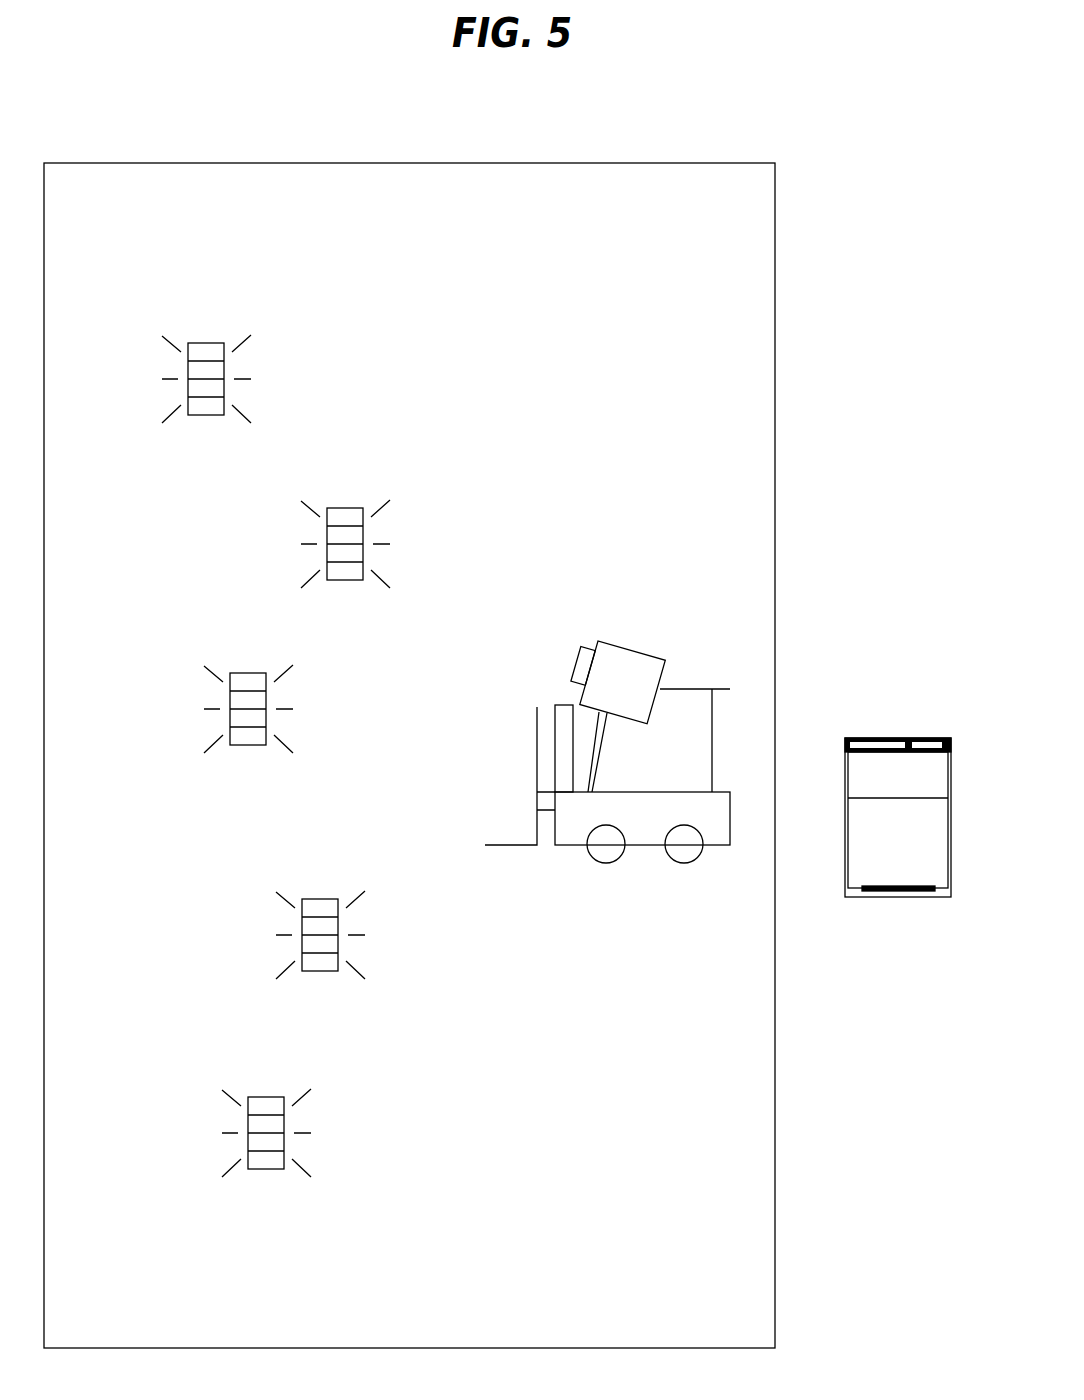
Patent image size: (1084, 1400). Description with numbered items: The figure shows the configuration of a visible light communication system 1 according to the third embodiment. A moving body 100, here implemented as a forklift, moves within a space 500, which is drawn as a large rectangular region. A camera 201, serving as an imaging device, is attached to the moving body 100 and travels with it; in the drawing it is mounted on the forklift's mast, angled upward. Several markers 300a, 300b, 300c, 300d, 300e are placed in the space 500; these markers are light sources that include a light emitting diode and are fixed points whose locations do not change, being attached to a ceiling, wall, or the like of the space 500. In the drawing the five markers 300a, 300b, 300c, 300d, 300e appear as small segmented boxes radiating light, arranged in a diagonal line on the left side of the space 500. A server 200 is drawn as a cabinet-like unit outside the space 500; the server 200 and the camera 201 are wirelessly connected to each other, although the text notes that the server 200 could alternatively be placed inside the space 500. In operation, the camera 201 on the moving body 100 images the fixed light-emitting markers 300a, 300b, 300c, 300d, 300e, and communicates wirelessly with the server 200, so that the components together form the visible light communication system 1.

The visible light communication system 1 is at (818, 246).
The moving body 100 is at (563, 705).
The server 200 is at (882, 738).
The camera 201 is at (662, 652).
The marker 300a is at (204, 343).
The marker 300b is at (357, 508).
The marker 300c is at (240, 673).
The marker 300d is at (320, 899).
The marker 300e is at (272, 1097).
The space 500 is at (775, 366).